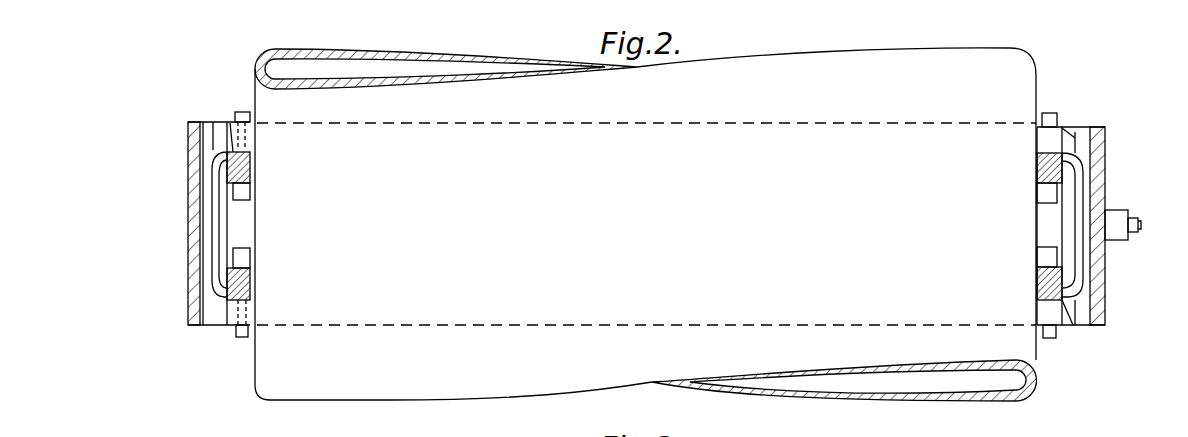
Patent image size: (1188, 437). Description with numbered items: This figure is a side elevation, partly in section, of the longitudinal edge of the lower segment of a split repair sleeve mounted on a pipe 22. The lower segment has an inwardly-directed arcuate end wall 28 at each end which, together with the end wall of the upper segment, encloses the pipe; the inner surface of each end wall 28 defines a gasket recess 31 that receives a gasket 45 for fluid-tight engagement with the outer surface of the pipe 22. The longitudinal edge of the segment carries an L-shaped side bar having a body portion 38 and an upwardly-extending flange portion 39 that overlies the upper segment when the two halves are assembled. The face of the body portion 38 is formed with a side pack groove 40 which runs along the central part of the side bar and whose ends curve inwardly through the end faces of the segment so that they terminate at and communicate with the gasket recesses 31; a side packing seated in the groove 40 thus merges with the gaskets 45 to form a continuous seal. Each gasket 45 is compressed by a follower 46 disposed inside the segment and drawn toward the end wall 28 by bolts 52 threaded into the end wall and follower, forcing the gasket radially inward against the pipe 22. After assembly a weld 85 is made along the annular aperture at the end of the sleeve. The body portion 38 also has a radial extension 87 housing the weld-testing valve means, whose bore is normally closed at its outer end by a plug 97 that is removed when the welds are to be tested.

The pipe 22 is at (1013, 394).
The end wall 28 is at (1064, 330).
The gasket recess 31 is at (234, 152).
The body portion 38 is at (1088, 312).
The flange portion 39 is at (1100, 162).
The side pack groove 40 is at (204, 262).
The gasket 45 is at (226, 164).
The follower 46 is at (240, 193).
The bolt 52 is at (241, 112).
The weld 85 is at (1047, 112).
The radial extension 87 is at (1118, 240).
The plug 97 is at (1141, 228).